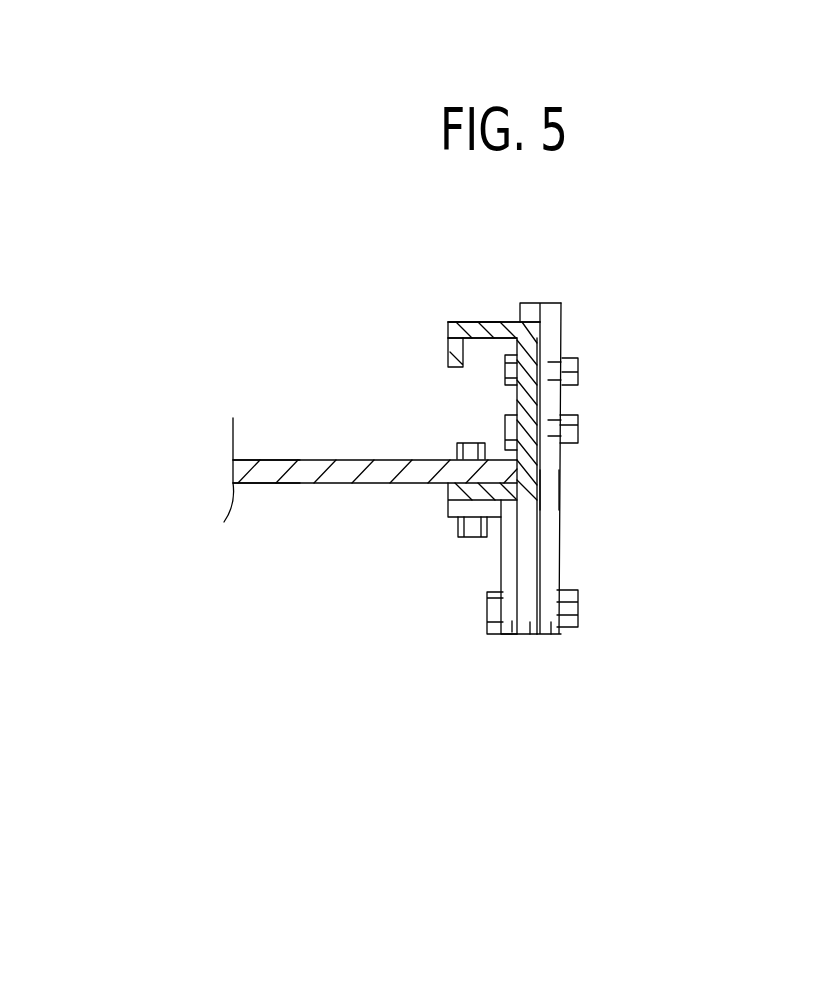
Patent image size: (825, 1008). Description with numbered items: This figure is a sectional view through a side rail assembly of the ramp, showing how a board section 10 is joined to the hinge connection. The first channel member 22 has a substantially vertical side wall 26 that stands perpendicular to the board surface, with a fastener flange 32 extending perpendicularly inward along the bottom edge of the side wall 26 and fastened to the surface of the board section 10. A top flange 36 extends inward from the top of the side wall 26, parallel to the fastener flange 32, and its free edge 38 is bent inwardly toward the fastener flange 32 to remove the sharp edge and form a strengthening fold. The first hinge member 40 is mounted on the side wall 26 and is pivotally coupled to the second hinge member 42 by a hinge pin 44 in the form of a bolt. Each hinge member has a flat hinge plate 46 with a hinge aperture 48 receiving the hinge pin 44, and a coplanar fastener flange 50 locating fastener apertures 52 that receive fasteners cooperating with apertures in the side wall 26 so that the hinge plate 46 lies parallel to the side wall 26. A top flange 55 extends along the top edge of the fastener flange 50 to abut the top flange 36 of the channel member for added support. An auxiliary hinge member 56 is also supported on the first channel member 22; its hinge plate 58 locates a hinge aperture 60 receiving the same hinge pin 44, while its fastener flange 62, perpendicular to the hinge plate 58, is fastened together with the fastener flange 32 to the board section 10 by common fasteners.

The board section 10 is at (327, 486).
The first channel member 22 is at (493, 323).
The side wall 26 is at (527, 398).
The fastener flange 32 is at (450, 487).
The top flange 36 is at (465, 324).
The free edge 38 is at (448, 354).
The first hinge member 40 is at (556, 490).
The second hinge member 42 is at (527, 564).
The hinge pin 44 is at (578, 613).
The hinge plate 46 is at (528, 538).
The hinge aperture 48 is at (530, 634).
The fastener flange 50 is at (560, 403).
The fastener apertures 52 is at (552, 360).
The top flange 55 is at (528, 303).
The auxiliary hinge member 56 is at (504, 552).
The hinge plate 58 is at (512, 636).
The hinge aperture 60 is at (513, 600).
The fastener flange 62 is at (450, 510).